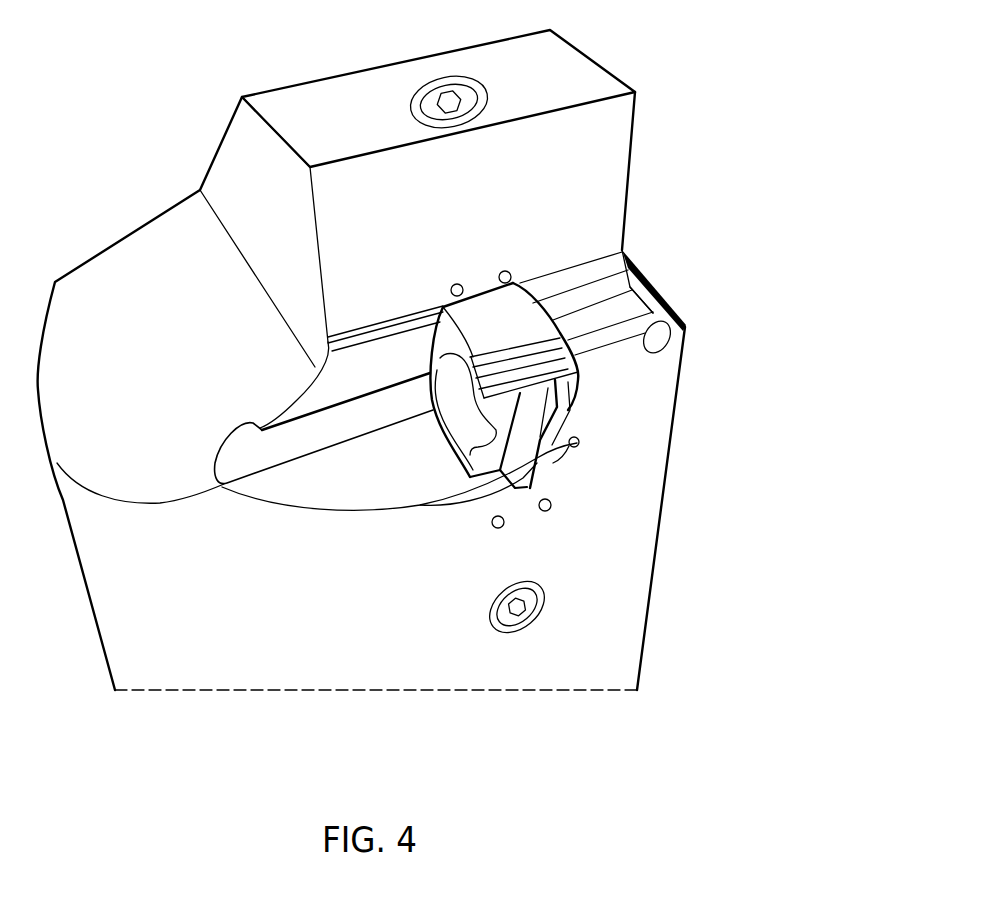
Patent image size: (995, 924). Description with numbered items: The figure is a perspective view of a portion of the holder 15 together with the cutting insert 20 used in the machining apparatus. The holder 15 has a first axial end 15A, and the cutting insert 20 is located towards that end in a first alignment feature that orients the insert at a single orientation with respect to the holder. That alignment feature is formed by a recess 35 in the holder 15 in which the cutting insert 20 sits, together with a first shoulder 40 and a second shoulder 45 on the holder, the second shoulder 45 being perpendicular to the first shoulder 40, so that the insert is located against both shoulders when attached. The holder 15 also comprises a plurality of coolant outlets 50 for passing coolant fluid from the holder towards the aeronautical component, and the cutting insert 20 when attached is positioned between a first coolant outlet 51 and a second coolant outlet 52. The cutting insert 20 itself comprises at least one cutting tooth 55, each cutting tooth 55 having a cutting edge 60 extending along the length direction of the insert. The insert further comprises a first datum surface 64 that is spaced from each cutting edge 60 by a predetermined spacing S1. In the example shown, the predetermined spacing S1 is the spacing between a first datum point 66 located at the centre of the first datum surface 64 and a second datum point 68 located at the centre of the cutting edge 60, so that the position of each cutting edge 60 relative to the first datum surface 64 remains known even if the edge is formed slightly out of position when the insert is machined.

The holder 15 is at (647, 606).
The first axial end 15A is at (560, 72).
The cutting insert 20 is at (522, 282).
The recess 35 is at (433, 427).
The first shoulder 40 is at (686, 330).
The second shoulder 45 is at (385, 358).
The coolant outlets 50 is at (514, 385).
The first coolant outlet 51 is at (502, 272).
The second coolant outlet 52 is at (545, 511).
The cutting tooth 55 is at (565, 428).
The cutting edge 60 is at (503, 455).
The first datum surface 64 is at (630, 287).
The first datum point 66 is at (443, 307).
The second datum point 68 is at (576, 444).
The predetermined spacing S1 is at (548, 388).